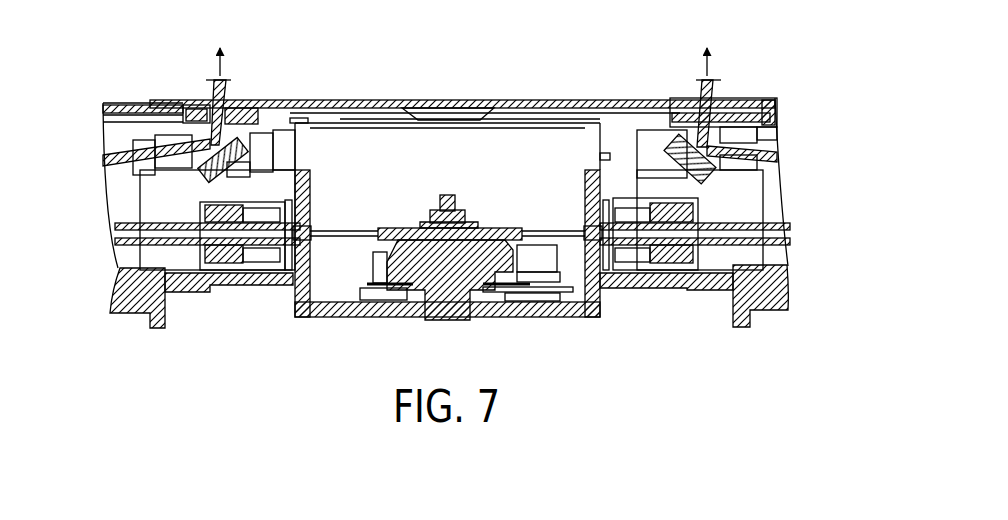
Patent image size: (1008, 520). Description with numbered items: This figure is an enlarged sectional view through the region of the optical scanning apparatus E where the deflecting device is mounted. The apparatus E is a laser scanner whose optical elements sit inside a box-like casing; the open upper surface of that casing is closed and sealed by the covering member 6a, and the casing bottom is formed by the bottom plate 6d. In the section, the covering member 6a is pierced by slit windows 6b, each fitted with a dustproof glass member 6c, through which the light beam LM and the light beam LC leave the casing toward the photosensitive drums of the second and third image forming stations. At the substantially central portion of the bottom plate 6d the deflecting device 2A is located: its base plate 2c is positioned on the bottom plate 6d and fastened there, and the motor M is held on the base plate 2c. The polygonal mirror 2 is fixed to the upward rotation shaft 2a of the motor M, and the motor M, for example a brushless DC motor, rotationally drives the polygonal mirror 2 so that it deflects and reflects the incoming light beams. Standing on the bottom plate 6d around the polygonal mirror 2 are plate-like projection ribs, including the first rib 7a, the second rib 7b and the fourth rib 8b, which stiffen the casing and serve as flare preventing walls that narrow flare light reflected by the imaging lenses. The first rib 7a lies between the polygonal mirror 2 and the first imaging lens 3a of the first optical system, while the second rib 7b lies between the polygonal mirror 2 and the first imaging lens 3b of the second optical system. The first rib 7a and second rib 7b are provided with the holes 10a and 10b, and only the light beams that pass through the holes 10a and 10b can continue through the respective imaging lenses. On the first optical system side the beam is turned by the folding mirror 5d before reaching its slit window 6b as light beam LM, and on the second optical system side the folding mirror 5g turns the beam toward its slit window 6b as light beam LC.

The optical scanning apparatus E is at (540, 75).
The covering member 6a is at (453, 99).
The slit window 6b is at (198, 106).
The dustproof glass member 6c is at (209, 97).
The bottom plate 6d is at (363, 313).
The folding mirror 5d is at (229, 138).
The folding mirror 5g is at (677, 133).
The light beam LM is at (220, 45).
The light beam LC is at (709, 45).
The fourth rib 8b is at (397, 138).
The first rib 7a is at (314, 180).
The second rib 7b is at (577, 173).
The polygonal mirror 2 is at (492, 218).
The rotation shaft 2a is at (448, 193).
The deflecting device 2A is at (370, 263).
The base plate 2c is at (520, 298).
The motor M is at (455, 294).
The hole 10a is at (318, 220).
The hole 10b is at (576, 220).
The first imaging lens 3a is at (226, 269).
The first imaging lens 3b is at (684, 271).